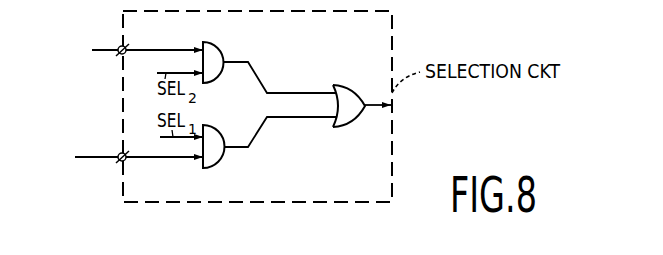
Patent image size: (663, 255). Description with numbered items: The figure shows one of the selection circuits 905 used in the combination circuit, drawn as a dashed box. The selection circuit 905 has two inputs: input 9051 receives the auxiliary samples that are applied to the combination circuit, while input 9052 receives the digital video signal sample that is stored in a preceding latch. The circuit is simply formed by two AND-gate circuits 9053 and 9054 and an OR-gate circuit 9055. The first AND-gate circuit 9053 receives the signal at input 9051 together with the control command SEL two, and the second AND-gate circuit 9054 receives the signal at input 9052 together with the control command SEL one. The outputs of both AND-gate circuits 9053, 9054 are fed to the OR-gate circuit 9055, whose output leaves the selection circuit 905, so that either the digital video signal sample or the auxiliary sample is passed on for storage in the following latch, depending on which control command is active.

The selection circuit 905 is at (202, 205).
The input 9051 is at (130, 40).
The input 9052 is at (130, 171).
The AND-gate circuit 9053 is at (218, 52).
The AND-gate circuit 9054 is at (218, 163).
The OR-gate circuit 9055 is at (352, 77).